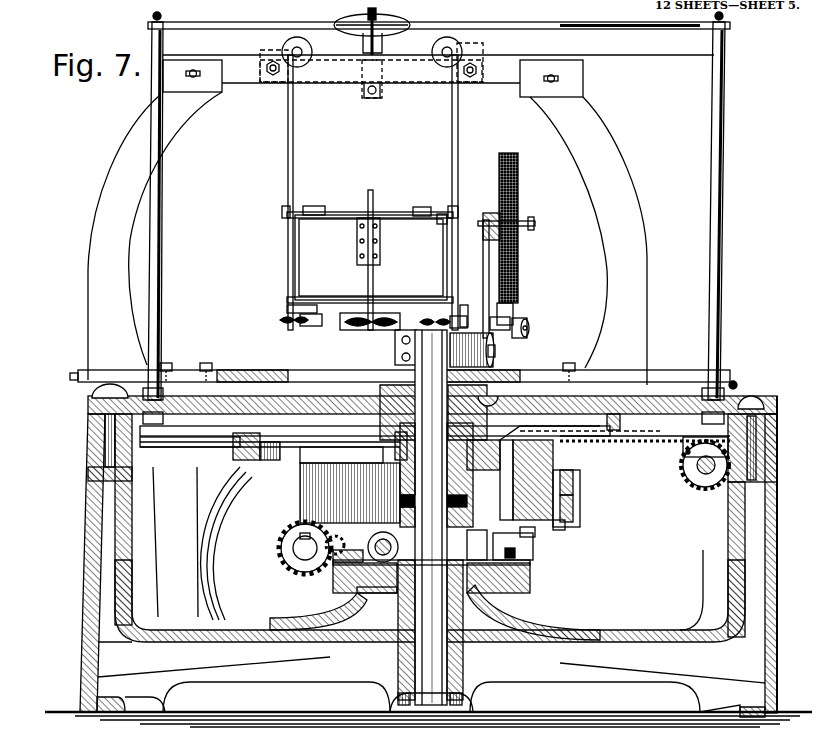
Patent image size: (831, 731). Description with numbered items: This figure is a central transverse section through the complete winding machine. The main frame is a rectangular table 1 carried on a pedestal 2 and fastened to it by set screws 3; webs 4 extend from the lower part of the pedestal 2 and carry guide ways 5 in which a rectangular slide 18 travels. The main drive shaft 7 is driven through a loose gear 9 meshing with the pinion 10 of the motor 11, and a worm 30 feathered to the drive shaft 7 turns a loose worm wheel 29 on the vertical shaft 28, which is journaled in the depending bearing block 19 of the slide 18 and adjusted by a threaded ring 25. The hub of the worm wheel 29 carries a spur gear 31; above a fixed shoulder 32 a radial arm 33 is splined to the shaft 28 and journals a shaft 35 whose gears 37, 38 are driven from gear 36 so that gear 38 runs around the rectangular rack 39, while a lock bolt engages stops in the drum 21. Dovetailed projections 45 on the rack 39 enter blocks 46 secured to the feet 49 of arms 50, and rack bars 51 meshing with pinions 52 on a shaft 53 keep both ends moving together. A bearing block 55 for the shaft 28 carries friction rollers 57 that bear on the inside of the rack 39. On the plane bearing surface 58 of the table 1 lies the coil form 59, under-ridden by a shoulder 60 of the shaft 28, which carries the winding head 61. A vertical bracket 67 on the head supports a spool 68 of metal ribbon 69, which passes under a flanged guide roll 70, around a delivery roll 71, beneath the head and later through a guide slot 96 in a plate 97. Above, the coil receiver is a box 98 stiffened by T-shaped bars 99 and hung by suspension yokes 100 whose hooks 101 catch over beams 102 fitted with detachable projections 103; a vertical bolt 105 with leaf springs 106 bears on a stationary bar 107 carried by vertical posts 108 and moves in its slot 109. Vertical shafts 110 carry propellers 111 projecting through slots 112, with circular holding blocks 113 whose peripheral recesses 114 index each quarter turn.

The table 1 is at (775, 426).
The pedestal 2 is at (778, 586).
The set screws 3 is at (104, 435).
The webs 4 is at (186, 640).
The guide ways 5 is at (528, 573).
The main drive shaft 7 is at (386, 540).
The loose gear 9 is at (340, 556).
The pinion 10 is at (298, 572).
The motor 11 is at (208, 545).
The slide 18 is at (388, 590).
The bearing block 19 is at (458, 627).
The drum 21 is at (578, 509).
The threaded ring 25 is at (484, 698).
The vertical shaft 28 is at (412, 656).
The worm wheel 29 is at (506, 549).
The worm 30 is at (372, 600).
The spur gear 31 is at (472, 549).
The fixed shoulder 32 is at (398, 503).
The radial arm 33 is at (570, 470).
The shaft 35 is at (578, 491).
The spur gear 36 is at (524, 538).
The fixed spur gear 37 is at (557, 528).
The fixed spur gear 38 is at (558, 432).
The rectangular rack 39 is at (233, 455).
The dovetailed projections 45 is at (234, 428).
The blocks 46 is at (167, 437).
The feet 49 is at (180, 370).
The arms 50 is at (100, 195).
The rack bars 51 is at (642, 445).
The pinions 52 is at (690, 478).
The shaft 53 is at (702, 476).
The bearing block 55 is at (375, 386).
The friction rollers 57 is at (390, 450).
The plane bearing surface 58 is at (332, 382).
The coil form 59 is at (290, 370).
The shoulder 60 is at (408, 386).
The winding head 61 is at (494, 352).
The vertical bracket 67 is at (484, 262).
The spool 68 is at (510, 246).
The metal ribbon 69 is at (517, 311).
The flanged guide roll 70 is at (529, 329).
The delivery roll 71 is at (494, 362).
The guide slot 96 is at (476, 322).
The plate 97 is at (522, 322).
The box 98 is at (284, 266).
The T-shaped bars 99 is at (343, 218).
The suspension yoke 100 is at (318, 30).
The hooks 101 is at (290, 50).
The horizontal beams 102 is at (404, 83).
The detachable projections 103 is at (483, 55).
The vertical bolt 105 is at (360, 20).
The leaf springs 106 is at (400, 19).
The stationary bar 107 is at (240, 17).
The vertical posts 108 is at (163, 240).
The slot 109 is at (480, 19).
The vertical shafts 110 is at (297, 205).
The propellers 111 is at (280, 322).
The slots 112 is at (362, 330).
The circular holding blocks 113 is at (284, 211).
The peripheral recesses 114 is at (284, 218).